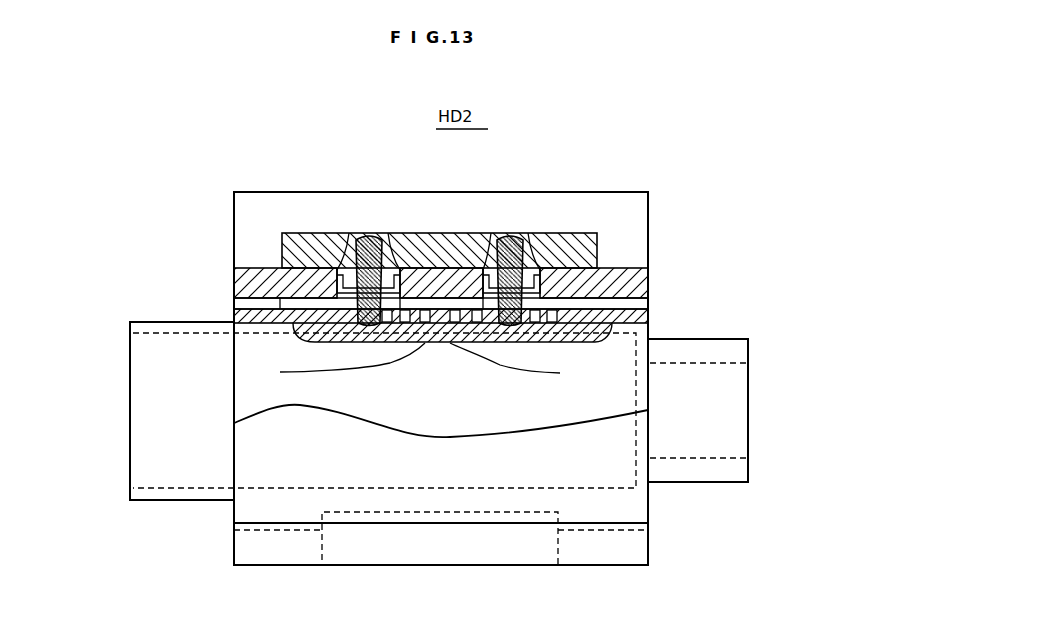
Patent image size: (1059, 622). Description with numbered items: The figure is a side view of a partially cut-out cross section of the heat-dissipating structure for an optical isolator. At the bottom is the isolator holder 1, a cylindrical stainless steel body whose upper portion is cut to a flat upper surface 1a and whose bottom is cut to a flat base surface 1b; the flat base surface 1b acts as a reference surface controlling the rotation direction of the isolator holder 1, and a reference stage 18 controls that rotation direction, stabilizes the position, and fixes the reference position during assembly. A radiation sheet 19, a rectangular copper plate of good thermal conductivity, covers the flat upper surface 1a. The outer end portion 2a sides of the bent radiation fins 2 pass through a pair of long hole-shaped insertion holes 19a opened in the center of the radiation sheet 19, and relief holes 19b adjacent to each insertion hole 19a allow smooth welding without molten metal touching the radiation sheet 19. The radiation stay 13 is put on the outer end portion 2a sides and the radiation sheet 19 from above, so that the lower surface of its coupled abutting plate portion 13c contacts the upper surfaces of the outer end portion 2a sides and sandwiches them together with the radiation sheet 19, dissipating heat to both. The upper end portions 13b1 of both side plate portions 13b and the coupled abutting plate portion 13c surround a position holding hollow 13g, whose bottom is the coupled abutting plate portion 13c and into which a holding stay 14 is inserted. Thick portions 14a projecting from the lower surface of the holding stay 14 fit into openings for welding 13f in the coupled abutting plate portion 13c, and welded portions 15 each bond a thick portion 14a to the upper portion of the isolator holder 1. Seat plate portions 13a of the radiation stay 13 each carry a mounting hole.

The isolator holder 1 is at (253, 405).
The flat upper surface 1a is at (287, 298).
The flat base surface 1b is at (367, 512).
The radiation fins 2 is at (398, 303).
The outer end portion 2a is at (290, 305).
The radiation stay 13 is at (210, 226).
The seat plate portion 13a is at (627, 543).
The side plate portion 13b is at (603, 503).
The upper end portion 13b1 is at (633, 200).
The coupled abutting plate portion 13c is at (628, 264).
The opening for welding 13f is at (338, 266).
The position holding hollow 13g is at (248, 202).
The holding stay 14 is at (427, 248).
The thick portion 14a is at (355, 262).
The welded portion 15 is at (370, 240).
The reference stage 18 is at (337, 553).
The radiation sheet 19 is at (238, 322).
The insertion hole 19a is at (280, 372).
The relief hole 19b is at (332, 341).